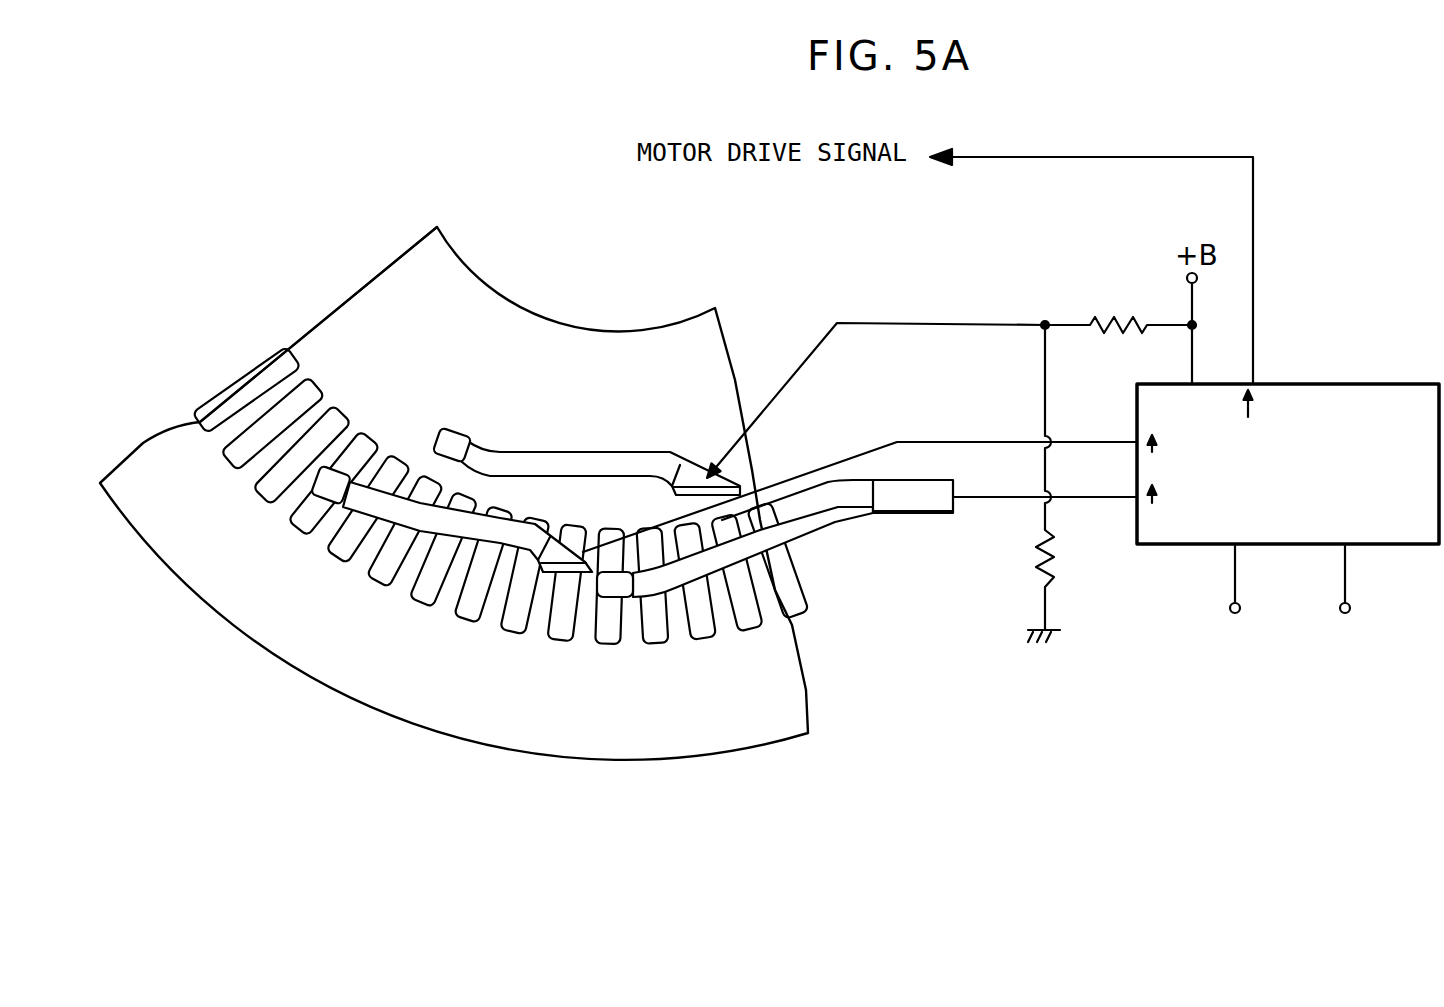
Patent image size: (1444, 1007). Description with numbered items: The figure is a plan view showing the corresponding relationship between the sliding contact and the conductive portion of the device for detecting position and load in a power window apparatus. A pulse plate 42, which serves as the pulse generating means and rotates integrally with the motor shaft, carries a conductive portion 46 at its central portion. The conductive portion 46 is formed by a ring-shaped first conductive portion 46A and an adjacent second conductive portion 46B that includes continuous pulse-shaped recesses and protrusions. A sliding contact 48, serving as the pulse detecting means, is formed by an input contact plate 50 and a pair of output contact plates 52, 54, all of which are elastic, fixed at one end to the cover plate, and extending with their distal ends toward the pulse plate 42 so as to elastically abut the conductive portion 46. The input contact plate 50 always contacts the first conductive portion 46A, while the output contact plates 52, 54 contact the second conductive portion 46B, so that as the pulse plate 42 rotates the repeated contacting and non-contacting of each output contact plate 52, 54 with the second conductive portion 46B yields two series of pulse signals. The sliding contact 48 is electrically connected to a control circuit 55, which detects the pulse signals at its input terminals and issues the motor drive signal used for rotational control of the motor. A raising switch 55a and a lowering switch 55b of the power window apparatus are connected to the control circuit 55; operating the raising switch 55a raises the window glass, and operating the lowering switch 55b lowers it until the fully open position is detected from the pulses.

The pulse plate 42 is at (320, 688).
The conductive portion 46 is at (490, 435).
The first conductive portion 46A is at (353, 368).
The second conductive portion 46B is at (302, 460).
The sliding contact 48 is at (632, 638).
The input contact plate 50 is at (457, 449).
The output contact plate 52 is at (360, 508).
The output contact plate 54 is at (610, 583).
The control circuit 55 is at (1365, 384).
The raising switch 55a is at (1240, 604).
The lowering switch 55b is at (1350, 604).